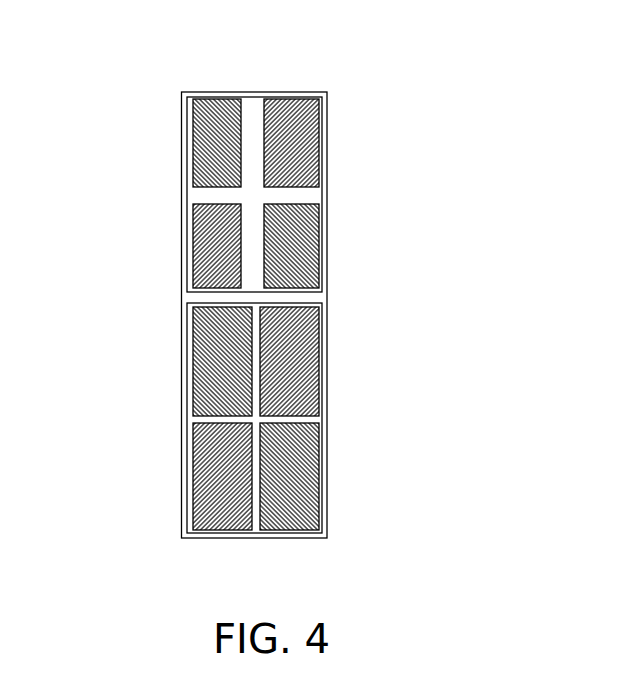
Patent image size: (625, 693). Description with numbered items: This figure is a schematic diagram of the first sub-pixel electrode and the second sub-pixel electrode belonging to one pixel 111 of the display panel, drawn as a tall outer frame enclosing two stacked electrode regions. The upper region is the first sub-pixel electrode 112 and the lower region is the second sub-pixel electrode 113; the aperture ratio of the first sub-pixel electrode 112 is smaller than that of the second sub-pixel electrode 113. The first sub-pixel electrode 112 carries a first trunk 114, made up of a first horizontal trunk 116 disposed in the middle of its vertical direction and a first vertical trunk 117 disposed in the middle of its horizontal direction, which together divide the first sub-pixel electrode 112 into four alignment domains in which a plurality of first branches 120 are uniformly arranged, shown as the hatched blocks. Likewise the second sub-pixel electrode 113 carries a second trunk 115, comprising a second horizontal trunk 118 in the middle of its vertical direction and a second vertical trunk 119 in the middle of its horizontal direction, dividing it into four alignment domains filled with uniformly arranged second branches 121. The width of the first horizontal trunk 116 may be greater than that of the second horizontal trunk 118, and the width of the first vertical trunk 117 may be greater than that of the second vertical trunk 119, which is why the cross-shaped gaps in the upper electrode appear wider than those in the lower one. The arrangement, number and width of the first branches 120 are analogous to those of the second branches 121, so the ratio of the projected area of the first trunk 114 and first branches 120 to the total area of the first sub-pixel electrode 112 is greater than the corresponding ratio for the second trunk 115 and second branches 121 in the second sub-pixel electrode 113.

The pixel 111 is at (443, 282).
The first sub-pixel electrode 112 is at (322, 294).
The second sub-pixel electrode 113 is at (322, 305).
The first trunk 114 is at (261, 147).
The second trunk 115 is at (251, 447).
The first horizontal trunk 116 is at (297, 195).
The first vertical trunk 117 is at (312, 73).
The second horizontal trunk 118 is at (303, 420).
The second vertical trunk 119 is at (275, 549).
The first branches 120 is at (198, 253).
The second branches 121 is at (205, 370).